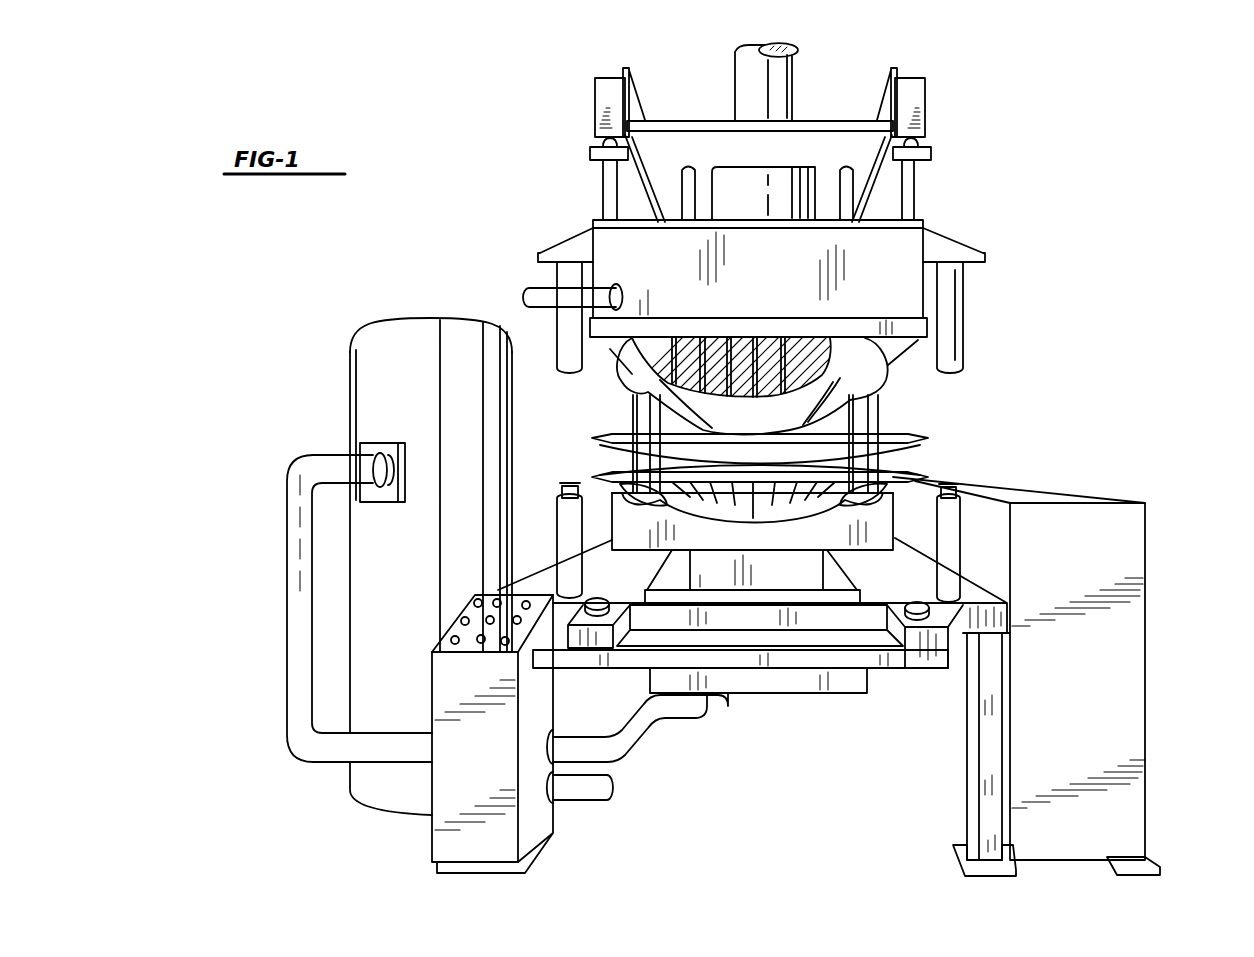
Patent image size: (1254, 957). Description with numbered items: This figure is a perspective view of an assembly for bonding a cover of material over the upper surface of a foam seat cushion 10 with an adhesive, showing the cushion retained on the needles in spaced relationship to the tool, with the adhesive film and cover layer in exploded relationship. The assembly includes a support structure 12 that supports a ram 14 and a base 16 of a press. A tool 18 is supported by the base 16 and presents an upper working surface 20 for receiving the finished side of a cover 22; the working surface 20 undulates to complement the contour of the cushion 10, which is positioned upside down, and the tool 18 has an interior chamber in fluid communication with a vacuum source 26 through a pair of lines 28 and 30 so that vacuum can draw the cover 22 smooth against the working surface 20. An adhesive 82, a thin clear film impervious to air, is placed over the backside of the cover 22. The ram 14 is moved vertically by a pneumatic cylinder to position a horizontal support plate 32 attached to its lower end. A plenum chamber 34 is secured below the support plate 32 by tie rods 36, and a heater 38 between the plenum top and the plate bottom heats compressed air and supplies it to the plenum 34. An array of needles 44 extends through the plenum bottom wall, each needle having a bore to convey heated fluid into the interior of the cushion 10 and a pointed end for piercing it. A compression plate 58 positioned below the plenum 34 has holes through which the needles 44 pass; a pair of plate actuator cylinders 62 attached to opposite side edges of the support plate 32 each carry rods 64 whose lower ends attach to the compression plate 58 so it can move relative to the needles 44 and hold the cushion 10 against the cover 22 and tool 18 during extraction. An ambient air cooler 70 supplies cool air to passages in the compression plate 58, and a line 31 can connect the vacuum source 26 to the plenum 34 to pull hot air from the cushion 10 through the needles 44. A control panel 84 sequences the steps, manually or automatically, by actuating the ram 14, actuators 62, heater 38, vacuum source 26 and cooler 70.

The foam seat cushion 10 is at (892, 393).
The support structure 12 is at (992, 800).
The ram 14 is at (780, 83).
The base 16 is at (993, 622).
The tool 18 is at (623, 522).
The upper working surface 20 is at (800, 500).
The cover 22 is at (925, 477).
The vacuum source 26 is at (385, 338).
The line 28 is at (287, 481).
The line 30 is at (648, 740).
The line 31 is at (540, 288).
The horizontal support plate 32 is at (660, 122).
The plenum chamber 34 is at (890, 235).
The tie rods 36 is at (686, 178).
The heater 38 is at (733, 173).
The needles 44 is at (760, 338).
The compression plate 58 is at (918, 330).
The plate actuator cylinders 62 is at (595, 100).
The rods 64 is at (603, 190).
The ambient air cooler 70 is at (1125, 688).
The adhesive 82 is at (925, 437).
The control panel 84 is at (505, 832).